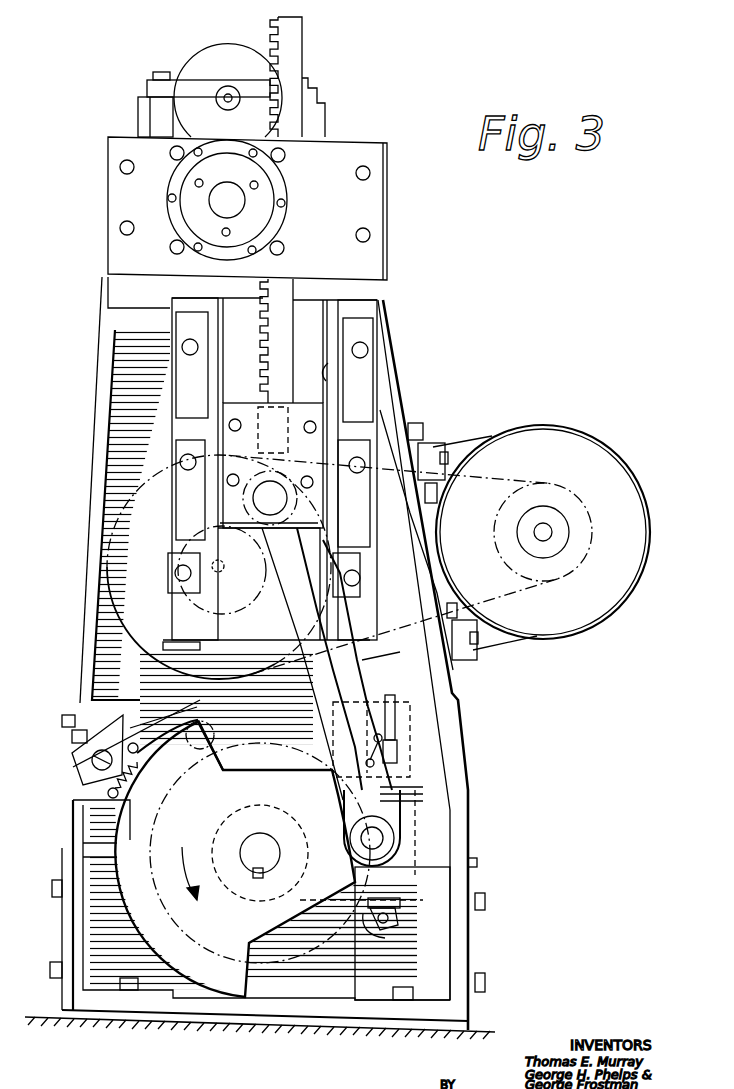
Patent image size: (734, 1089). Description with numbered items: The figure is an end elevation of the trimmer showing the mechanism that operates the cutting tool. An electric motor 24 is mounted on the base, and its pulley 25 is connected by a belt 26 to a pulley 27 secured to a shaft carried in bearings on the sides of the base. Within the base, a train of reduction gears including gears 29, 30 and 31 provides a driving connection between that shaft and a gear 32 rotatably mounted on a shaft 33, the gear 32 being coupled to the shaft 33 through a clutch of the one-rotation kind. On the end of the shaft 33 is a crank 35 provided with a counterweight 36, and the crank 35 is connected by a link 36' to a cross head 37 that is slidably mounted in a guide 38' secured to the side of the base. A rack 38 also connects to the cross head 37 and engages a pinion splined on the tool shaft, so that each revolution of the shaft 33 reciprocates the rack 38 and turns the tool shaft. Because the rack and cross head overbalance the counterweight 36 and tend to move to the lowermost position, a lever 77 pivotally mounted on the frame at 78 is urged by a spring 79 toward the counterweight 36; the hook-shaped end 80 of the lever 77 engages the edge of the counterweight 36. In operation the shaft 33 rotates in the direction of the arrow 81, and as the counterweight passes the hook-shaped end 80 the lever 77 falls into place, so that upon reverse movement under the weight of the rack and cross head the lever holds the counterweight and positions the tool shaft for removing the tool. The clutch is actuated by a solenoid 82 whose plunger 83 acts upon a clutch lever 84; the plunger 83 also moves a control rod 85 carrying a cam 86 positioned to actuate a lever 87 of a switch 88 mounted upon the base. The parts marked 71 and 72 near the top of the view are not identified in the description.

The electric motor 24 is at (597, 437).
The pulley 25 is at (583, 518).
The belt 26 is at (500, 477).
The pulley 27 is at (113, 632).
The reduction gear 29 is at (262, 590).
The reduction gear 30 is at (147, 633).
The reduction gear 31 is at (193, 742).
The gear 32 is at (183, 930).
The shaft 33 is at (250, 862).
The crank 35 is at (388, 843).
The counterweight 36 is at (260, 601).
The link 36' is at (395, 650).
The cross head 37 is at (313, 445).
The rack 38 is at (348, 210).
The guide 38' is at (407, 355).
The gear 71 is at (225, 48).
The bracket 72 is at (138, 110).
The lever 77 is at (145, 720).
The pivot 78 is at (73, 768).
The spring 79 is at (140, 773).
The hook-shaped end 80 is at (217, 723).
The arrow 81 is at (183, 892).
The solenoid 82 is at (398, 880).
The plunger 83 is at (398, 915).
The clutch lever 84 is at (363, 915).
The control rod 85 is at (398, 788).
The cam 86 is at (398, 749).
The lever 87 is at (443, 717).
The switch 88 is at (370, 687).